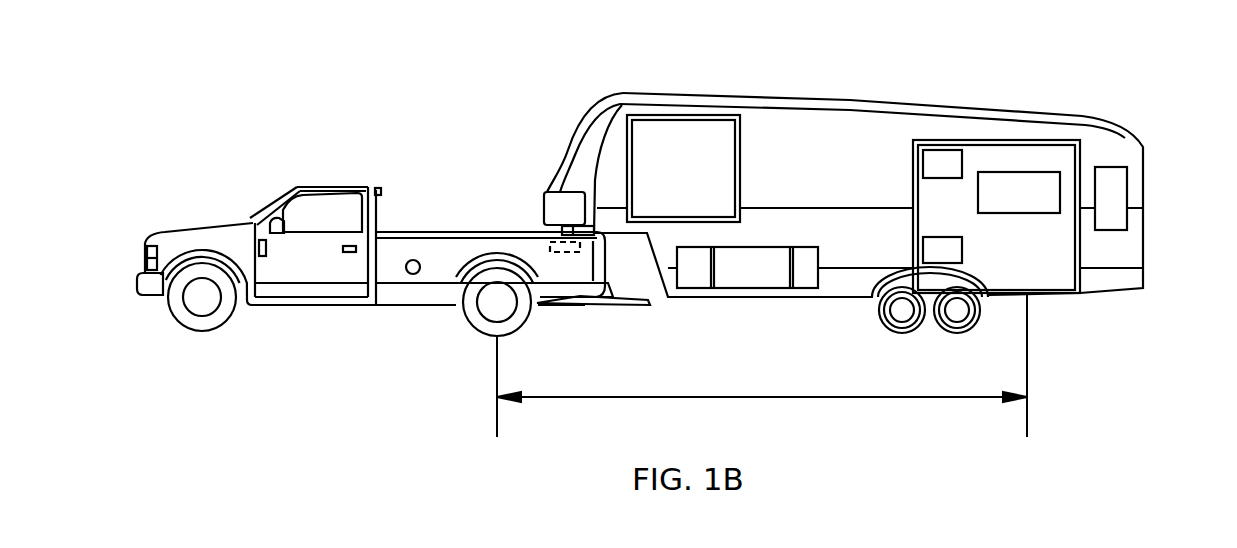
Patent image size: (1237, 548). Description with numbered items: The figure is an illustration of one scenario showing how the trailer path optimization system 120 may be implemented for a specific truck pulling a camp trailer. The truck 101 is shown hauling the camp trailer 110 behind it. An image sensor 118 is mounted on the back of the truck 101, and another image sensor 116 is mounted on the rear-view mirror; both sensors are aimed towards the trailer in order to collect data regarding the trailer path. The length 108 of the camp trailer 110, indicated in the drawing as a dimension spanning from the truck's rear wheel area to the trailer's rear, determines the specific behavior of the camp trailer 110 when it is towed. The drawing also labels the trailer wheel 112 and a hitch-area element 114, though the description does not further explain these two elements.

The truck 101 is at (455, 245).
The length 108 is at (830, 398).
The camp trailer 110 is at (944, 128).
The trailer wheel / axle 112 is at (960, 315).
The hitch sensor 114 is at (575, 253).
The image sensor 116 is at (256, 222).
The image sensor 118 is at (377, 188).
The trailer path optimization system 120 is at (268, 243).